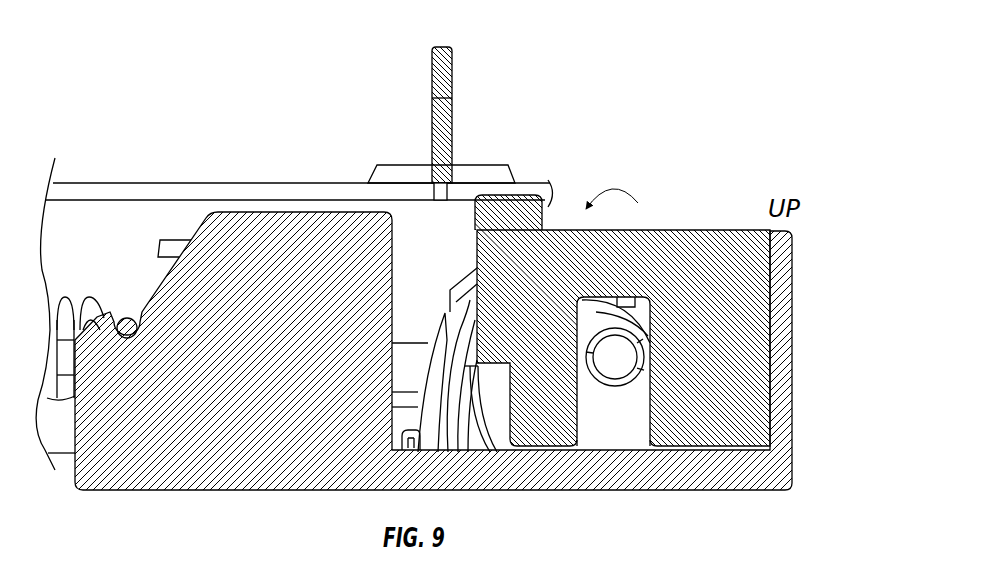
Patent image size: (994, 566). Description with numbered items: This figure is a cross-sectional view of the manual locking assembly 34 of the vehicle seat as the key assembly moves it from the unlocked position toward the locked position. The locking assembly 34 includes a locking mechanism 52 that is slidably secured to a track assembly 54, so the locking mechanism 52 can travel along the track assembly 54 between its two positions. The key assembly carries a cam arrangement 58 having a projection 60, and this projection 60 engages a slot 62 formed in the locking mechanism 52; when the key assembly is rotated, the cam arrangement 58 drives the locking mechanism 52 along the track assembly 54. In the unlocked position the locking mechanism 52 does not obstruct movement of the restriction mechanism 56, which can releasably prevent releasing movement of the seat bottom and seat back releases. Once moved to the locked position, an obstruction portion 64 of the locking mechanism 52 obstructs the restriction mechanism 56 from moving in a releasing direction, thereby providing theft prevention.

The locking assembly 34 is at (598, 81).
The locking mechanism 52 is at (750, 297).
The track assembly 54 is at (170, 455).
The restriction mechanism 56 is at (452, 72).
The cam arrangement 58 is at (596, 318).
The projection 60 is at (615, 388).
The slot 62 is at (635, 407).
The obstruction portion 64 is at (513, 210).